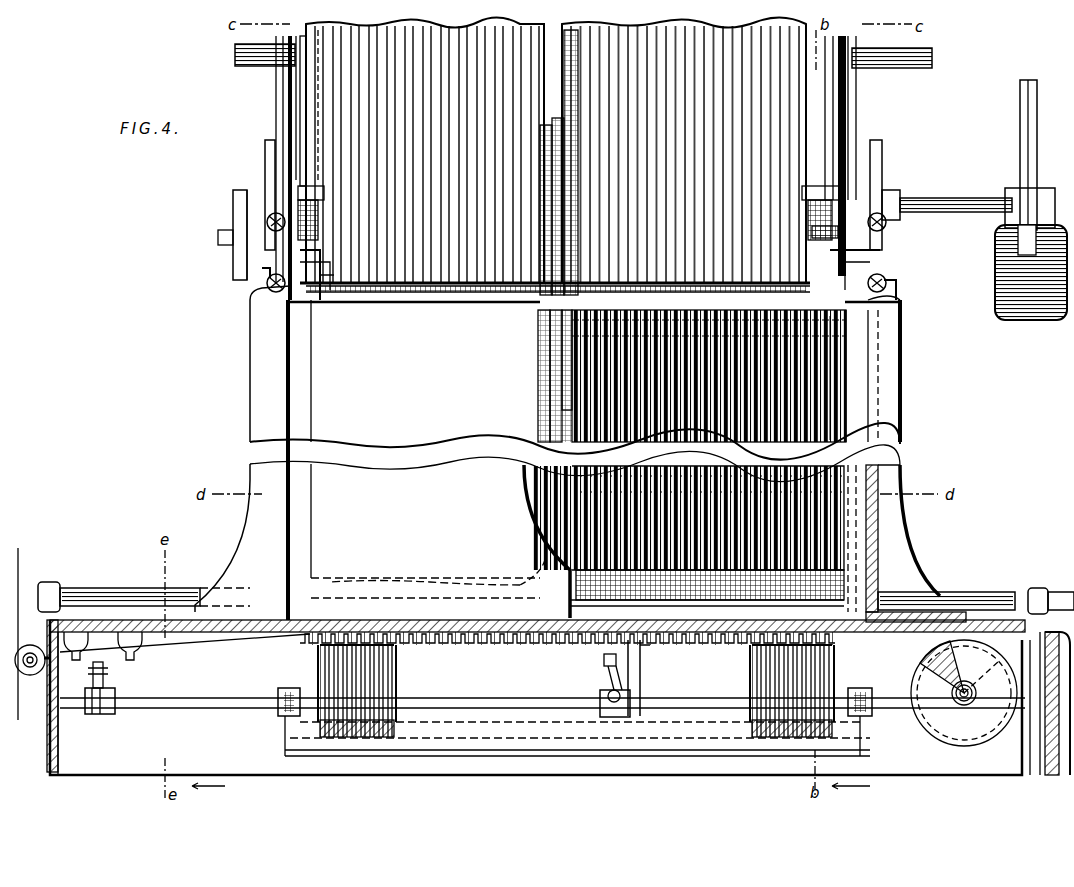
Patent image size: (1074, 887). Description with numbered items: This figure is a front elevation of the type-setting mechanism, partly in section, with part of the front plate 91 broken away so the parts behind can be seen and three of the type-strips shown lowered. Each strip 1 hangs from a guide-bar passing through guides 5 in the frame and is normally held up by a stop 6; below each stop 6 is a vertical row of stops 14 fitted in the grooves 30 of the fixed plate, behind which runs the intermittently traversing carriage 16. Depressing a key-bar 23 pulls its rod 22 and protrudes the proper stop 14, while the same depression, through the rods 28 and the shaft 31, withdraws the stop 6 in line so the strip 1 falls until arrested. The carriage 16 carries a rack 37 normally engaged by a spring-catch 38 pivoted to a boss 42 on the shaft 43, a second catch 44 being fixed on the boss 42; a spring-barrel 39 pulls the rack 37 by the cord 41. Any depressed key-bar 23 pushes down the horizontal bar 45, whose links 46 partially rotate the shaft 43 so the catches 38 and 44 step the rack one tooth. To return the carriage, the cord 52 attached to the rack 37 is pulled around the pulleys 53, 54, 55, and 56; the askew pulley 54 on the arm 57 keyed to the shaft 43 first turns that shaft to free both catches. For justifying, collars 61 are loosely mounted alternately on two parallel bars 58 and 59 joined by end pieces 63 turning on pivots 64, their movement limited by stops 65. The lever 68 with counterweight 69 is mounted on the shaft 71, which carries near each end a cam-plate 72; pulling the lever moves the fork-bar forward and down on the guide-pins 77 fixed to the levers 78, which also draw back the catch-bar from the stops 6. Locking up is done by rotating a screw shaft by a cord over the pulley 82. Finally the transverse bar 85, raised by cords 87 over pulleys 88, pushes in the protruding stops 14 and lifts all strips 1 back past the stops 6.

The strip 1 is at (555, 154).
The guides 5 is at (846, 306).
The stops 6 is at (820, 328).
The stops 14 is at (622, 442).
The carriage 16 is at (545, 562).
The rod 22 is at (388, 662).
The key-bar 23 is at (394, 727).
The rods 28 is at (318, 662).
The grooves 30 is at (810, 368).
The shaft 31 is at (825, 228).
The rack 37 is at (500, 646).
The spring-catch 38 is at (604, 661).
The spring-barrel 39 is at (930, 682).
The cord 41 is at (558, 697).
The boss 42 is at (620, 716).
The shaft 43 is at (700, 706).
The catch 44 is at (642, 665).
The horizontal bar 45 is at (460, 750).
The links 46 is at (288, 714).
The cord 52 is at (18, 552).
The pulley 53 is at (136, 655).
The pulley 54 is at (104, 676).
The pulley 55 is at (75, 654).
The pulley 56 is at (32, 669).
The arm 57 is at (100, 708).
The bar 58 is at (318, 302).
The bar 59 is at (332, 290).
The collars 61 is at (882, 262).
The end pieces 63 is at (264, 276).
The pivots 64 is at (892, 288).
The stops 65 is at (292, 290).
The lever 68 is at (1037, 130).
The counterweight 69 is at (1031, 272).
The shaft 71 is at (955, 212).
The plate 72 is at (265, 172).
The guide-pins 77 is at (284, 228).
The levers 78 is at (318, 222).
The pulley 82 is at (233, 210).
The transverse bar 85 is at (690, 600).
The cords 87 is at (305, 96).
The pulleys 88 is at (300, 147).
The plate 91 is at (547, 453).